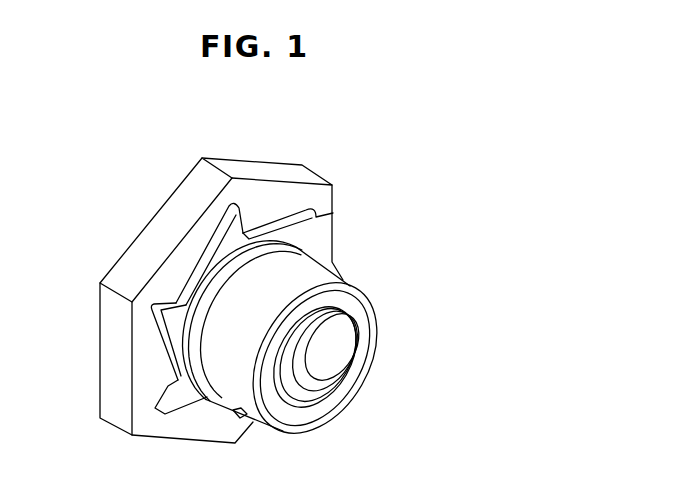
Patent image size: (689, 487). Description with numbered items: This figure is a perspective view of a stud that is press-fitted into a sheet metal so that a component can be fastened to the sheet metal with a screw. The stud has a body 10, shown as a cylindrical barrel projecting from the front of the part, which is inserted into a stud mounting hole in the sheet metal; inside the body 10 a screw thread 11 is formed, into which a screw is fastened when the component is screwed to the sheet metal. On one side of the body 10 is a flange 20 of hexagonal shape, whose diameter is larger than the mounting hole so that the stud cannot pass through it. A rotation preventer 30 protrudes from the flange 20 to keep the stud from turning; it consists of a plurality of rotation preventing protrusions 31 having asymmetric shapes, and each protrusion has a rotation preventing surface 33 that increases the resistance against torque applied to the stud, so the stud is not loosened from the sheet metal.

The body 10 is at (312, 265).
The screw thread 11 is at (354, 343).
The flange 20 is at (287, 194).
The rotation preventer 30 is at (264, 258).
The rotation preventing protrusions 31 is at (336, 212).
The rotation preventing surface 33 is at (261, 212).